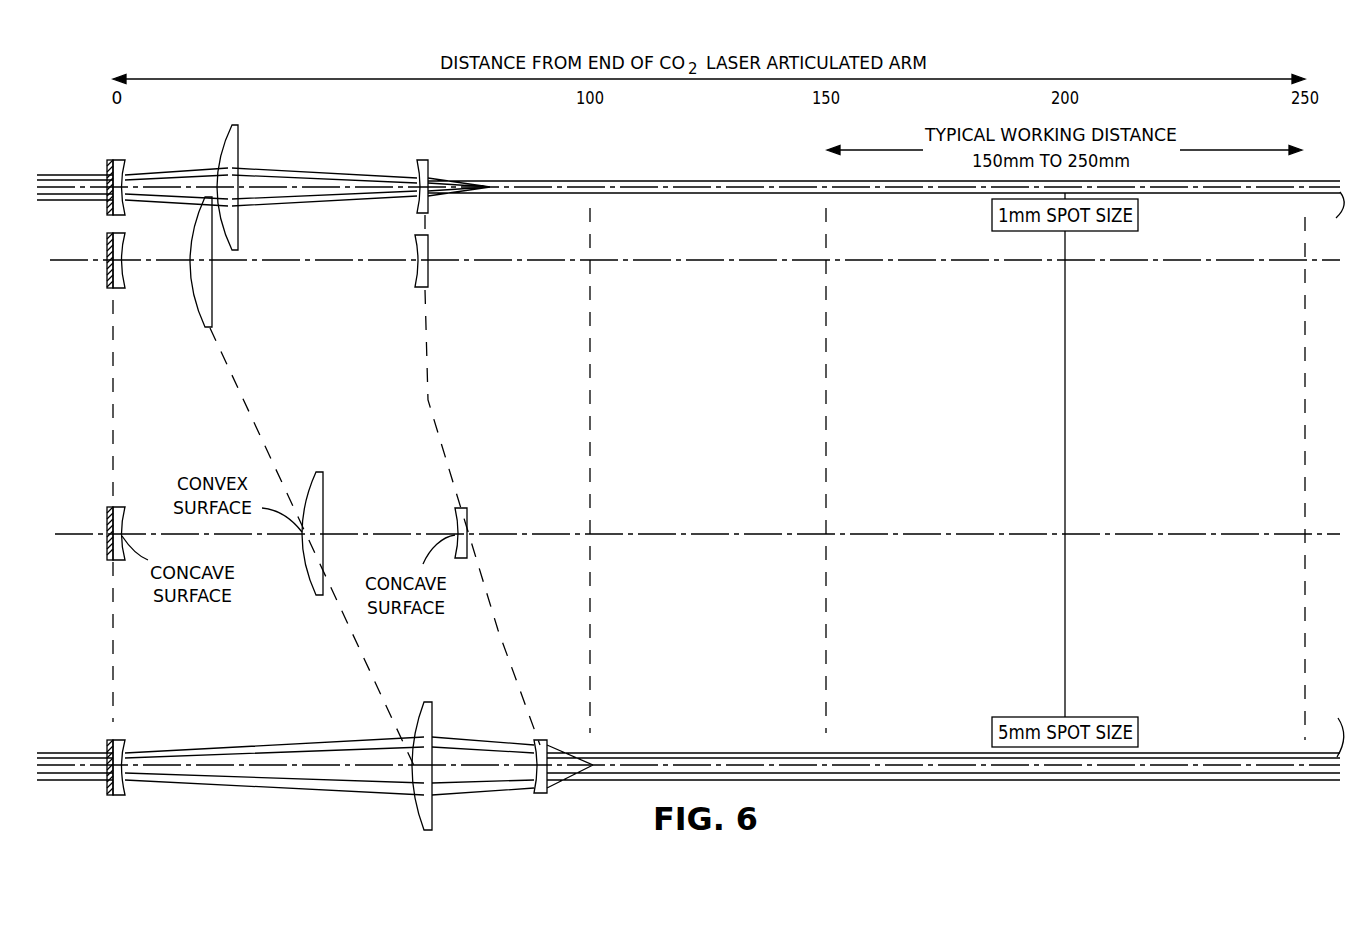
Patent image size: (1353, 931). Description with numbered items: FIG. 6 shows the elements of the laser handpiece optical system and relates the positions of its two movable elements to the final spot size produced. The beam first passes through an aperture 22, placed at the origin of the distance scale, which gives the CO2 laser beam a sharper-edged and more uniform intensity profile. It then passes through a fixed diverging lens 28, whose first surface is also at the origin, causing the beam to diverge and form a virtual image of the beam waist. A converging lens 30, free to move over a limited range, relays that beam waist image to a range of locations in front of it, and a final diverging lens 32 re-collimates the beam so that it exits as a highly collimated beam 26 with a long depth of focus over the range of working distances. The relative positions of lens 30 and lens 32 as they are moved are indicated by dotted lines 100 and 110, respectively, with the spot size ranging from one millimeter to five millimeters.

The aperture 22 is at (107, 168).
The diverging lens 28 is at (122, 158).
The converging lens 30 is at (238, 127).
The final diverging lens 32 is at (422, 160).
The highly collimated beam 26 is at (1329, 474).
The dotted line 100 is at (231, 366).
The dotted line 110 is at (432, 419).